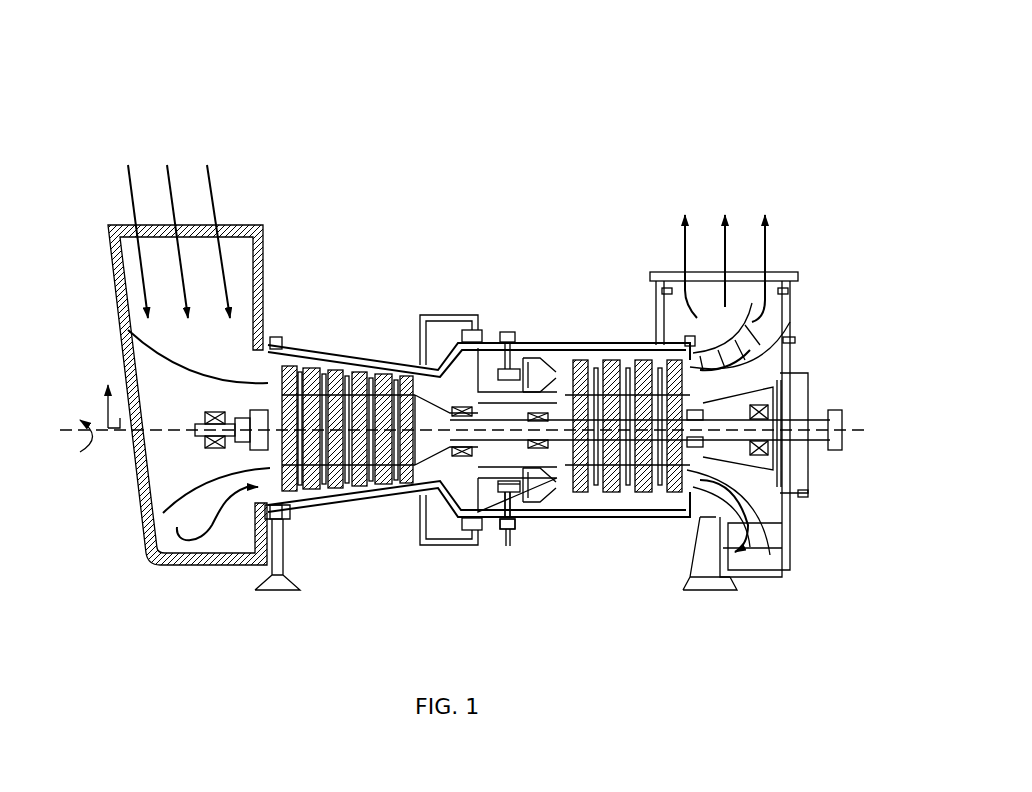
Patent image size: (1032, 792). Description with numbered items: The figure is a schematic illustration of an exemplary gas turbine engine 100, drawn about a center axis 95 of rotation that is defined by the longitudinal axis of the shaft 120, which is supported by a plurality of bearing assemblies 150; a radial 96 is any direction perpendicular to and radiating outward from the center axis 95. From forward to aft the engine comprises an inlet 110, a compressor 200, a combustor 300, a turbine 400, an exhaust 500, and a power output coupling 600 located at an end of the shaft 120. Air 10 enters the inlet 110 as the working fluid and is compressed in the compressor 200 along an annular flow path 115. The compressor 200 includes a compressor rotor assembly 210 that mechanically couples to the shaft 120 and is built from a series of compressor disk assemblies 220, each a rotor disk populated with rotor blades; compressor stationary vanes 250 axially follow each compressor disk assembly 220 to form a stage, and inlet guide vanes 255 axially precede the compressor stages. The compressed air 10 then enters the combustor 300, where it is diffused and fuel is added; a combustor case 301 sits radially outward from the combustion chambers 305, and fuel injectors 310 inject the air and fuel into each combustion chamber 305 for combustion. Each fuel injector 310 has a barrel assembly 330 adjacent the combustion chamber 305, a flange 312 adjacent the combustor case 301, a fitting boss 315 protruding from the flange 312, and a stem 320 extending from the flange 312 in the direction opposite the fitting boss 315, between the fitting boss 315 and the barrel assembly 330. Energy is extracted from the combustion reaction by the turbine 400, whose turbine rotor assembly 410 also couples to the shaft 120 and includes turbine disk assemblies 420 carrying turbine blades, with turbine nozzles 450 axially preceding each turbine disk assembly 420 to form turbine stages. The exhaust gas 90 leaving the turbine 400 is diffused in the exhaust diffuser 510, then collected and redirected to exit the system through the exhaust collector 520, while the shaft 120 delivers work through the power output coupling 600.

The gas turbine engine 100 is at (137, 50).
The inlet 110 is at (257, 138).
The compressor 200 is at (432, 138).
The combustor 300 is at (552, 138).
The turbine 400 is at (680, 138).
The exhaust 500 is at (815, 158).
The air 10 is at (130, 193).
The annular flow path 115 is at (254, 359).
The shaft 120 is at (205, 423).
The bearing assemblies 150 is at (220, 449).
The radial 96 is at (105, 392).
The center axis 95 is at (79, 442).
The inlet guide vanes 255 is at (284, 349).
The compressor stationary vanes 250 is at (346, 372).
The compressor disk assemblies 220 is at (318, 488).
The compressor rotor assembly 210 is at (344, 524).
The combustor case 301 is at (546, 342).
The combustion chambers 305 is at (538, 362).
The fuel injectors 310 is at (504, 333).
The stem 320 is at (504, 530).
The fitting boss 315 is at (508, 536).
The flange 312 is at (512, 522).
The barrel assembly 330 is at (518, 486).
The turbine nozzles 450 is at (640, 360).
The turbine disk assemblies 420 is at (653, 492).
The turbine rotor assembly 410 is at (617, 532).
The exhaust gas 90 is at (683, 230).
The exhaust diffuser 510 is at (705, 367).
The exhaust collector 520 is at (776, 308).
The power output coupling 600 is at (834, 409).